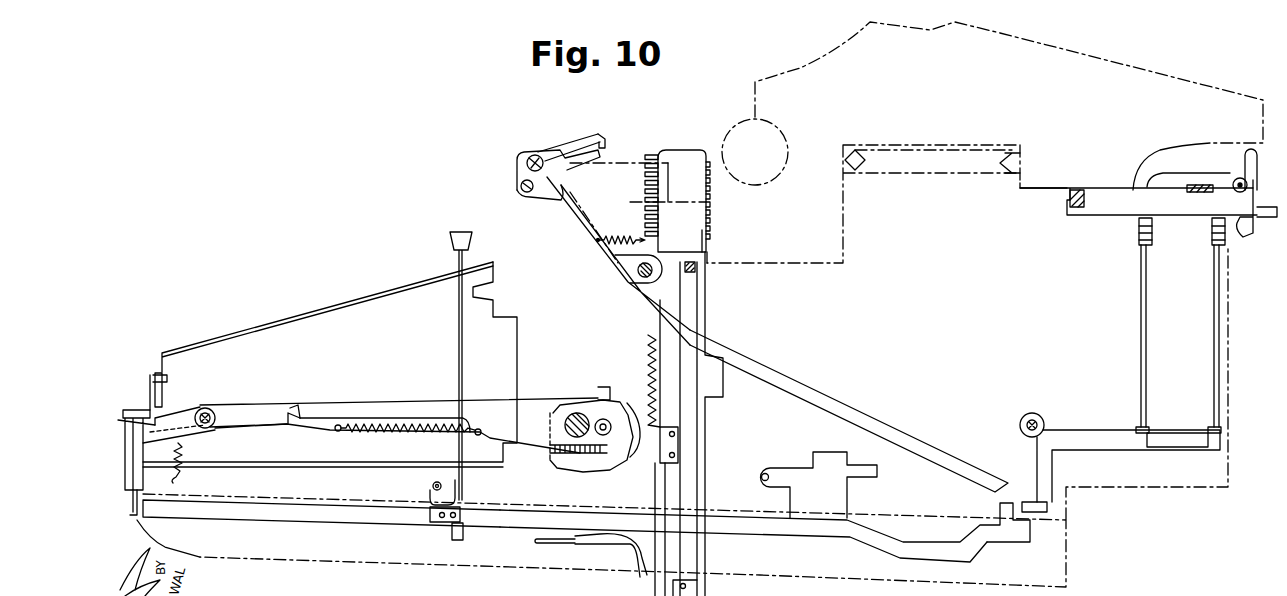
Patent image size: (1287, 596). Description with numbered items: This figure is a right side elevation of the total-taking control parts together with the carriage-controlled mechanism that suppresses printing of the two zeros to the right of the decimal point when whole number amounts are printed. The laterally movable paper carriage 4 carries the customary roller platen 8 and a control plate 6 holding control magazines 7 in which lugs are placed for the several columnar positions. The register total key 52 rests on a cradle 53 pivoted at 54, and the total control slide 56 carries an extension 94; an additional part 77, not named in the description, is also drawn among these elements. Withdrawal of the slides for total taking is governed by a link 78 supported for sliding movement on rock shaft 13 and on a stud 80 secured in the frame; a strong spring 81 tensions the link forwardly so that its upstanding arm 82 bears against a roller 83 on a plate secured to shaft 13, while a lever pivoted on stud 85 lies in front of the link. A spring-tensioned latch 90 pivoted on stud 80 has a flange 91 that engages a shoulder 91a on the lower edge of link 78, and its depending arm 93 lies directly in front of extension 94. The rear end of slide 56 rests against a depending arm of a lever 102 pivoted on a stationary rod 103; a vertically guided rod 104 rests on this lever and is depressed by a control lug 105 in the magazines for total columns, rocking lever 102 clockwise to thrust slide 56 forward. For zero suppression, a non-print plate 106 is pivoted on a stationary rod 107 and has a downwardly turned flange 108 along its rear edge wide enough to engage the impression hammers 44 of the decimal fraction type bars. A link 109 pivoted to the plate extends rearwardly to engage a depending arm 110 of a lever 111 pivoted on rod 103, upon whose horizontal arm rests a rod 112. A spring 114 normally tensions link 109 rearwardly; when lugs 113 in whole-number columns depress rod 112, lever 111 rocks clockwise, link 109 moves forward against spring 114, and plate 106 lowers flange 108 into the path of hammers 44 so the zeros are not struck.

The paper carriage 4 is at (1107, 82).
The control plate 6 is at (1073, 192).
The control magazine 7 is at (1102, 207).
The roller platen 8 is at (772, 170).
The rock shaft 13 is at (548, 459).
The impression hammer 44 is at (555, 205).
The register total key 52 is at (460, 370).
The cradle 53 is at (457, 485).
The cradle pivot 54 is at (433, 486).
The total control slide 56 is at (543, 512).
The rod 77 is at (150, 373).
The link 78 is at (387, 407).
The stud 80 is at (203, 407).
The spring 81 is at (387, 435).
The upstanding arm 82 is at (607, 388).
The roller 83 is at (605, 440).
The stud 85 is at (140, 407).
The latch 90 is at (265, 425).
The flange 91 is at (288, 425).
The shoulder 91a is at (292, 412).
The depending arm 93 is at (137, 518).
The extension 94 is at (337, 507).
The lever 102 is at (1112, 440).
The stationary rod 103 is at (1036, 418).
The rod 104 is at (1145, 287).
The control lug 105 is at (1142, 222).
The non-print plate 106 is at (578, 133).
The stationary rod 107 is at (535, 155).
The downwardly turned flange 108 is at (605, 140).
The link 109 is at (787, 380).
The depending arm 110 is at (1047, 512).
The lever 111 is at (1162, 437).
The rod 112 is at (1215, 325).
The lug 113 is at (1227, 227).
The spring 114 is at (633, 237).